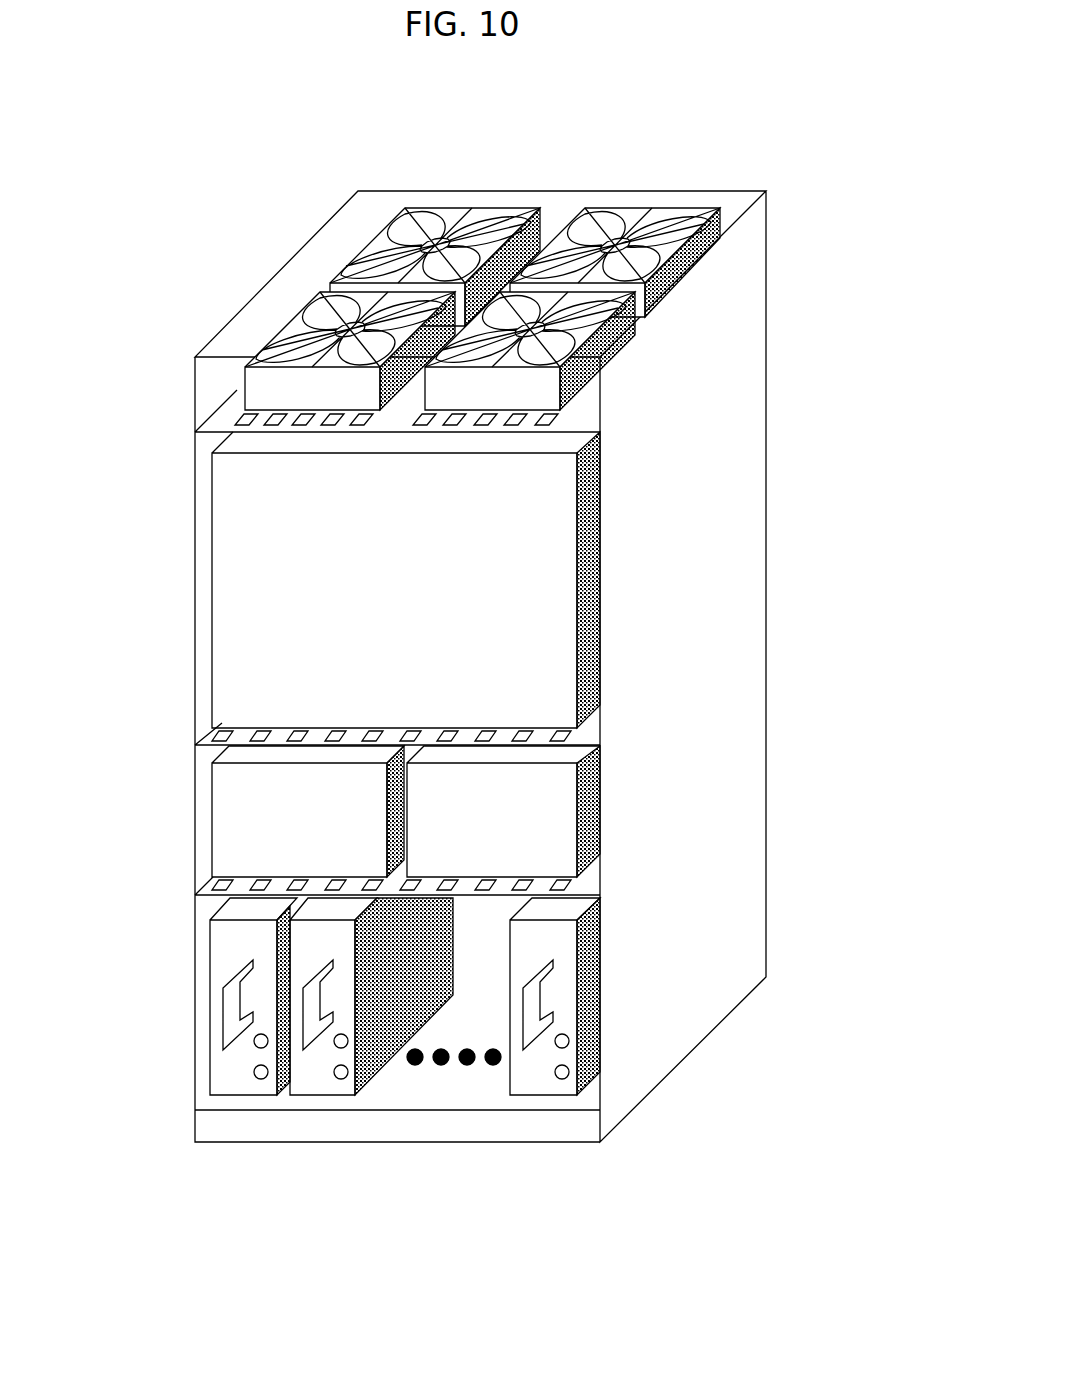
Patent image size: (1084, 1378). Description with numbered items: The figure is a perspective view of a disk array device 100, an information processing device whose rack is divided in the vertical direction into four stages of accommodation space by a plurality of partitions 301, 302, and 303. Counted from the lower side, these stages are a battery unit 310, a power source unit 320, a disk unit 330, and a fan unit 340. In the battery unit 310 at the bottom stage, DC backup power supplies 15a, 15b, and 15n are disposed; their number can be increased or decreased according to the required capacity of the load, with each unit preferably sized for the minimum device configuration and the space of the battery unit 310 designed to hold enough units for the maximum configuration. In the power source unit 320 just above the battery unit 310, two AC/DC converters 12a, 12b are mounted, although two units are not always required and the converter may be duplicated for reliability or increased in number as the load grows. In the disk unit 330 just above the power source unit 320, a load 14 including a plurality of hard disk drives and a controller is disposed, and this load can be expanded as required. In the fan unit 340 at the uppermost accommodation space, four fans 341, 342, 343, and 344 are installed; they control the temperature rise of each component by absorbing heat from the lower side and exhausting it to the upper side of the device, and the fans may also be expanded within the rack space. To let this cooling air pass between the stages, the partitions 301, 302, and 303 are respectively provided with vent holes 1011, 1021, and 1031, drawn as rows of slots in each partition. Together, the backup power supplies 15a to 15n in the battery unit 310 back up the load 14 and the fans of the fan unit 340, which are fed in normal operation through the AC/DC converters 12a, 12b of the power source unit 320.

The disk array device 100 is at (765, 352).
The fan unit 340 is at (397, 281).
The fan 341 is at (370, 240).
The fan 342 is at (297, 314).
The fan 343 is at (620, 207).
The fan 344 is at (622, 330).
The partition 303 is at (394, 420).
The vent hole 1031 is at (585, 421).
The disk unit 330 is at (396, 580).
The load 14 is at (570, 553).
The partition 302 is at (400, 735).
The vent hole 1021 is at (585, 740).
The power source unit 320 is at (415, 815).
The AC/DC converter 12a is at (218, 866).
The AC/DC converter 12b is at (570, 803).
The partition 301 is at (396, 916).
The vent hole 1011 is at (568, 884).
The battery unit 310 is at (333, 1056).
The DC backup power supply 15a is at (235, 1095).
The DC backup power supply 15b is at (315, 1095).
The DC backup power supply 15n is at (540, 1095).